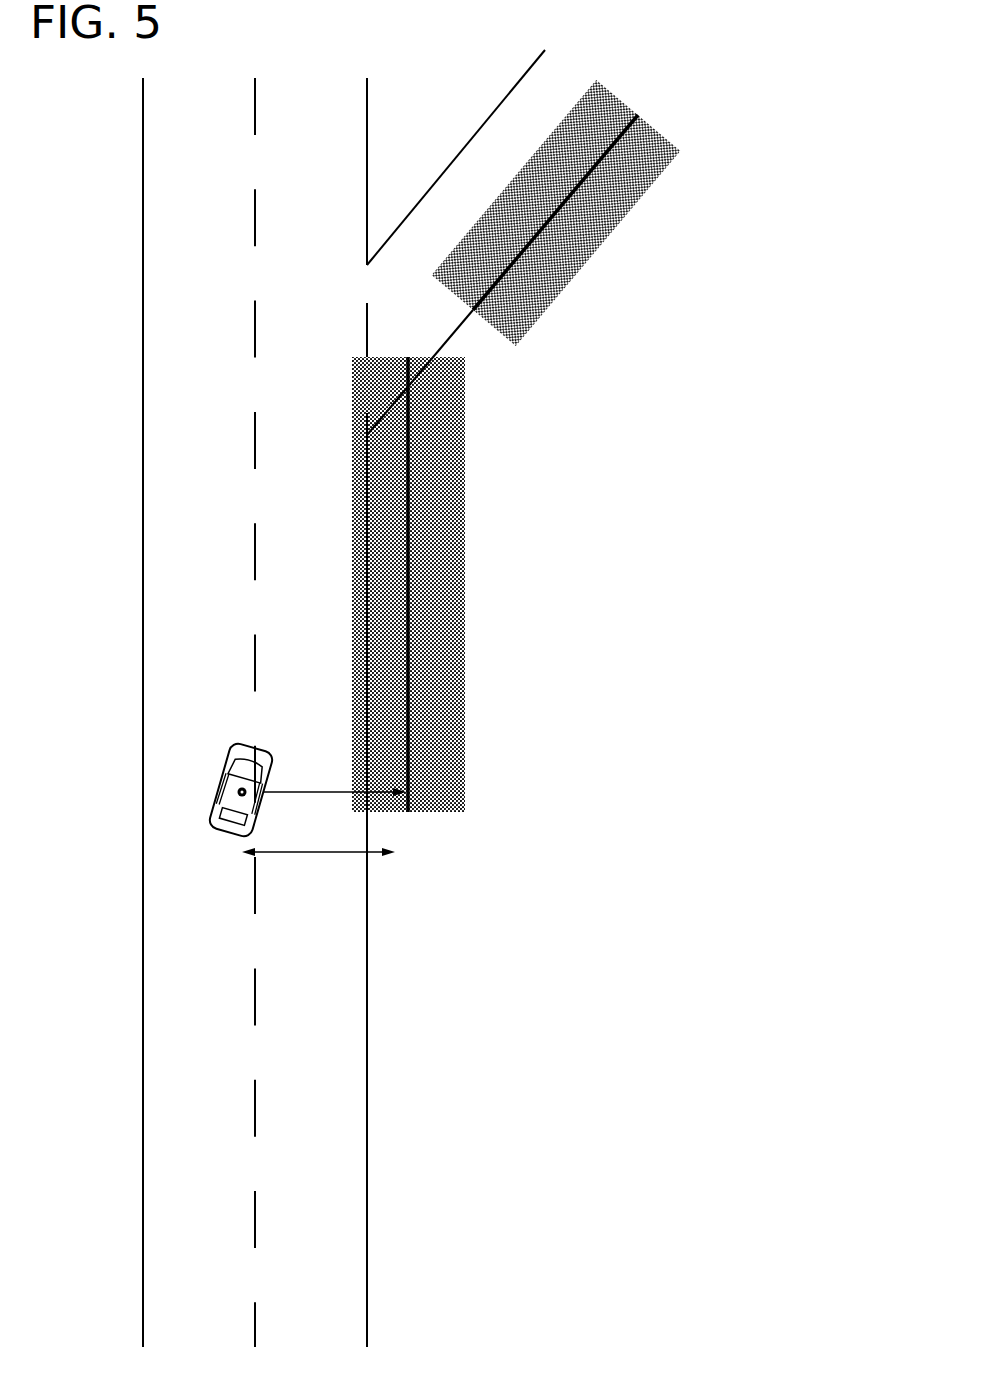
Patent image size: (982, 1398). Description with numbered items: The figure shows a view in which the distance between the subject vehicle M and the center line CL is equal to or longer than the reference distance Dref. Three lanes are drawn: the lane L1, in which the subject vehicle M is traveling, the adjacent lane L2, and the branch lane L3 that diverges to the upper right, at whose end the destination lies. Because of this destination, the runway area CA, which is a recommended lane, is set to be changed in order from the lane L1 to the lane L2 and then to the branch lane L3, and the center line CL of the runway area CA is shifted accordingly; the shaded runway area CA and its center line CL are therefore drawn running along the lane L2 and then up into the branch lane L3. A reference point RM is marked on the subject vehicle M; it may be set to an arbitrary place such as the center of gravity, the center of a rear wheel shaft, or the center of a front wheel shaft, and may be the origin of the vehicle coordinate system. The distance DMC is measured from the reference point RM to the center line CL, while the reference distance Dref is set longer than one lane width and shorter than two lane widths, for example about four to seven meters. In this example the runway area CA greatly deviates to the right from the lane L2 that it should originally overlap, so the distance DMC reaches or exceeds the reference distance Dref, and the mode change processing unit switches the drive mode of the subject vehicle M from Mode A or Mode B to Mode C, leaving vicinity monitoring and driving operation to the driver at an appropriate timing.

The lane L1 is at (212, 1348).
The lane L2 is at (325, 1348).
The branch lane L3 is at (540, 142).
The center line CL is at (575, 202).
The runway area CA is at (548, 277).
The subject vehicle M is at (232, 747).
The reference point RM is at (236, 792).
The distance between the reference point and the center line DMC is at (334, 776).
The reference distance Dref is at (318, 834).